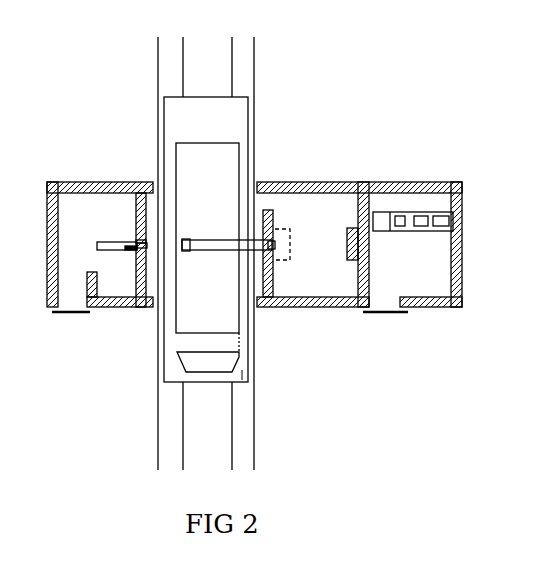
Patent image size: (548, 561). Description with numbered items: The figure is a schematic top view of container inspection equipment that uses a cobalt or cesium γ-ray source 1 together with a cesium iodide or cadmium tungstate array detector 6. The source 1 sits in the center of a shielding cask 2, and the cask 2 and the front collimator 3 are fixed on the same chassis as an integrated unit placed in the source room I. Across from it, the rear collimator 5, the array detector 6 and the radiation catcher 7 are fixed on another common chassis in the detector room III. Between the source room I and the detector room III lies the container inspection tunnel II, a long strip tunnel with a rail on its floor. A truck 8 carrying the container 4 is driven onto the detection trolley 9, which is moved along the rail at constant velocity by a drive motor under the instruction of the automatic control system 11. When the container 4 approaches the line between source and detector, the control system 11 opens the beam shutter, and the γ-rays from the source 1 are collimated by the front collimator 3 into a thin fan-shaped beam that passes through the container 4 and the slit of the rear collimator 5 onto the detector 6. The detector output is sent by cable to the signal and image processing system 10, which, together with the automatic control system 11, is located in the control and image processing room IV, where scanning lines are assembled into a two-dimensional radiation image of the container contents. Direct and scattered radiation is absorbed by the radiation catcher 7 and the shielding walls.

The γ-ray source 1 is at (124, 250).
The cask 2 is at (97, 244).
The front collimator 3 is at (136, 240).
The container 4 is at (207, 247).
The rear collimator 5 is at (186, 239).
The cesium iodide or cadmium tungstate array detector 6 is at (224, 240).
The radiation catcher 7 is at (264, 194).
The truck 8 is at (242, 376).
The detection trolley 9 is at (208, 362).
The signal and image processing system 10 is at (413, 221).
The automatic control system 11 is at (444, 225).
The source room I is at (100, 247).
The container inspection tunnel II is at (206, 253).
The detector room III is at (359, 247).
The control and image processing room IV is at (431, 244).